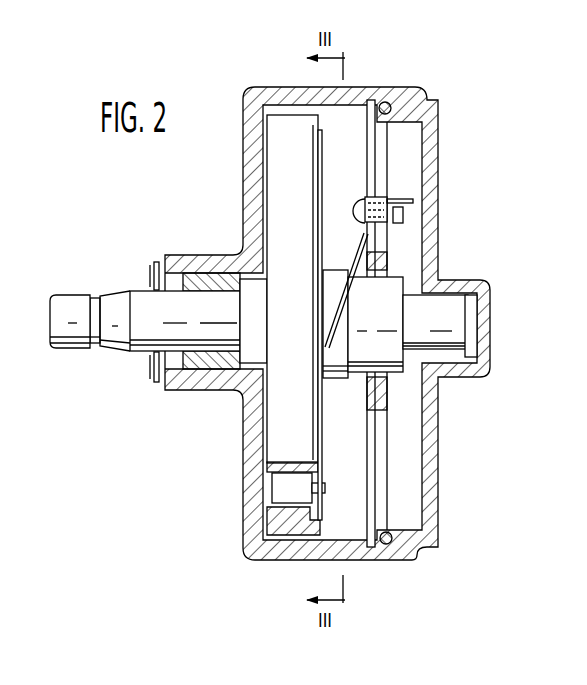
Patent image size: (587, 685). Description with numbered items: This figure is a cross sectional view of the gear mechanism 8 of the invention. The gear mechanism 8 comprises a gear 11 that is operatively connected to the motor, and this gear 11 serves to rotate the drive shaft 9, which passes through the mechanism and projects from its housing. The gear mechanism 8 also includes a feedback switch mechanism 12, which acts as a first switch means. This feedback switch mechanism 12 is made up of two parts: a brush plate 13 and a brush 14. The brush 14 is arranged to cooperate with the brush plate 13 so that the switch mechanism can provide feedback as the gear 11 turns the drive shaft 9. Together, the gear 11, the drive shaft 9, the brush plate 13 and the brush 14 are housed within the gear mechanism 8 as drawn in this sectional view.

The gear mechanism 8 is at (394, 83).
The drive shaft 9 is at (68, 307).
The gear 11 is at (283, 165).
The feedback switch mechanism 12 is at (345, 406).
The brush plate 13 is at (312, 435).
The brush 14 is at (358, 238).